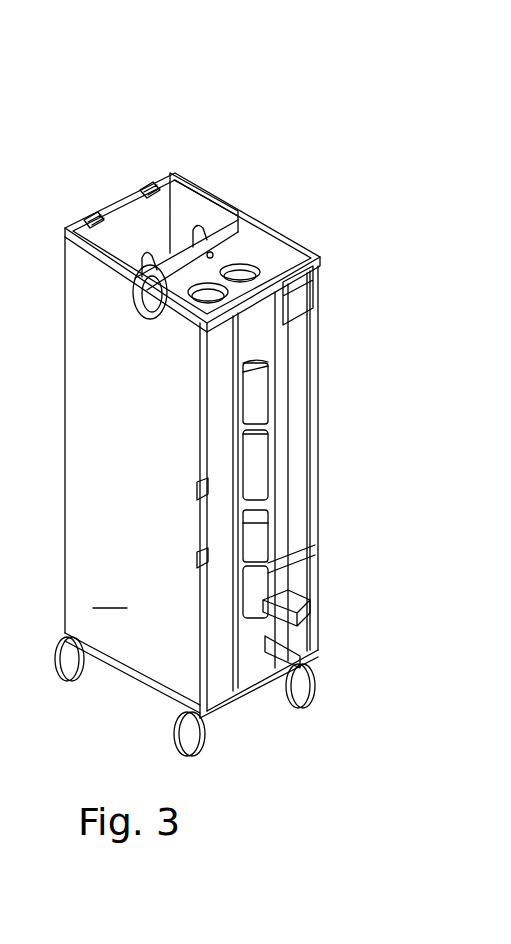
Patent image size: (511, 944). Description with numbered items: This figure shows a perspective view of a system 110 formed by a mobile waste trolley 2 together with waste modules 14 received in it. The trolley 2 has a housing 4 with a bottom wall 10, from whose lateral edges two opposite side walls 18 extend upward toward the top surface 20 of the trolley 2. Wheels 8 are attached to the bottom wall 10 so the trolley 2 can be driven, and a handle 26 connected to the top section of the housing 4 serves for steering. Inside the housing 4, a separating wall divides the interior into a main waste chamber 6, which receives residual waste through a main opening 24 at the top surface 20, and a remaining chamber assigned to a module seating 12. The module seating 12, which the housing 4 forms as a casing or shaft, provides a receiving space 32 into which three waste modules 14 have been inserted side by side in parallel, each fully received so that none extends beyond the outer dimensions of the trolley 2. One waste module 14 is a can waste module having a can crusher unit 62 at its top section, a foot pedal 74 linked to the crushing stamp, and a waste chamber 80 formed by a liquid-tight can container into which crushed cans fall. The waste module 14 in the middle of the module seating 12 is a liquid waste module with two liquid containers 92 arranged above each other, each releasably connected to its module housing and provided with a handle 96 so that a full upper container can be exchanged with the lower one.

The trolley 2 is at (338, 167).
The housing 4 is at (326, 598).
The main waste chamber 6 is at (118, 225).
The wheels 8 is at (88, 307).
The bottom wall 10 is at (138, 683).
The module seating 12 is at (268, 678).
The waste module 14 is at (223, 405).
The side walls 18 is at (110, 597).
The top surface 20 is at (195, 178).
The main opening 24 is at (132, 207).
The handle 26 is at (320, 250).
The receiving space 32 is at (240, 690).
The can crusher unit 62 is at (302, 305).
The foot pedal 74 is at (287, 607).
The waste chamber 80 is at (305, 358).
The liquid containers 92 is at (250, 357).
The handle 96 is at (262, 408).
The system 110 is at (313, 137).